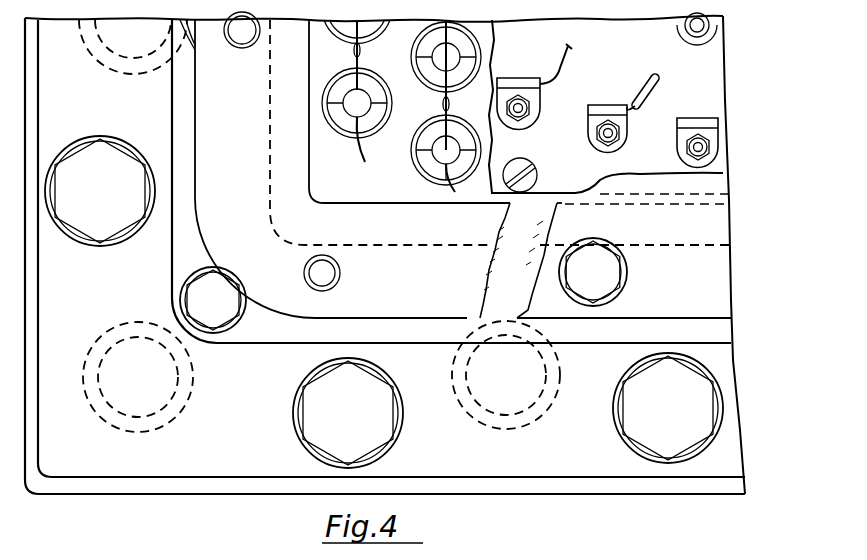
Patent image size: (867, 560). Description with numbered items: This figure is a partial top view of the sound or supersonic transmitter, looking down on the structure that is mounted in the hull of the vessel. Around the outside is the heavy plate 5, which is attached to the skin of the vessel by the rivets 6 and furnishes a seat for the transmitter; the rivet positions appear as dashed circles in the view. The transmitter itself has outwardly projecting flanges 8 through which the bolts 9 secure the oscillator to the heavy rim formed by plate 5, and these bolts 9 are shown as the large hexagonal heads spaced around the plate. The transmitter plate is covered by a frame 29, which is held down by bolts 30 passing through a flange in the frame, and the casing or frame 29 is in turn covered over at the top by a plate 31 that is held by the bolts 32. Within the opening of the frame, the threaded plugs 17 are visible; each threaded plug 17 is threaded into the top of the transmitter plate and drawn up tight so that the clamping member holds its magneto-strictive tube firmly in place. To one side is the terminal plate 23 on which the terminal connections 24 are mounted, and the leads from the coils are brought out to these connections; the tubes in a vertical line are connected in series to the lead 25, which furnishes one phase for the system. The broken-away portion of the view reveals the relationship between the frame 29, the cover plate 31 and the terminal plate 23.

The heavy plate 5 is at (93, 488).
The outwardly projecting flanges 8 is at (197, 455).
The frame 29 is at (377, 302).
The plate 31 is at (705, 301).
The terminal plate 23 is at (705, 96).
The threaded plug 17 is at (379, 100).
The terminal connections 24 is at (601, 143).
The lead 25 is at (659, 88).
The bolts 32 is at (615, 275).
The bolts 30 is at (207, 313).
The bolts 9 is at (380, 425).
The rivets 6 is at (533, 397).